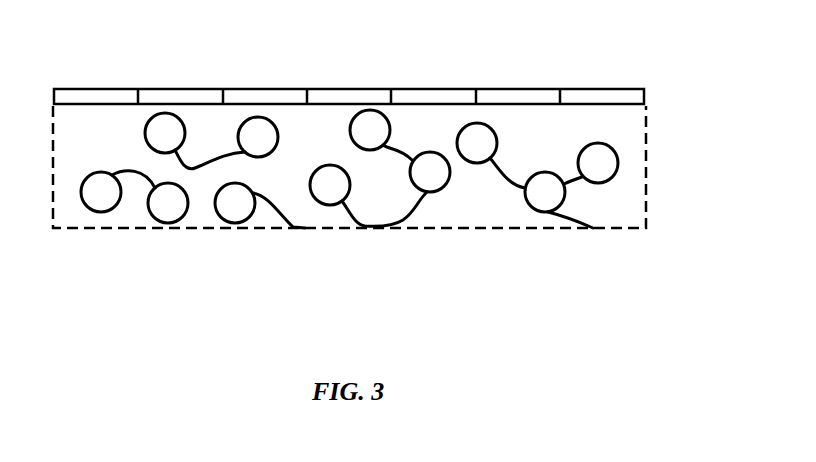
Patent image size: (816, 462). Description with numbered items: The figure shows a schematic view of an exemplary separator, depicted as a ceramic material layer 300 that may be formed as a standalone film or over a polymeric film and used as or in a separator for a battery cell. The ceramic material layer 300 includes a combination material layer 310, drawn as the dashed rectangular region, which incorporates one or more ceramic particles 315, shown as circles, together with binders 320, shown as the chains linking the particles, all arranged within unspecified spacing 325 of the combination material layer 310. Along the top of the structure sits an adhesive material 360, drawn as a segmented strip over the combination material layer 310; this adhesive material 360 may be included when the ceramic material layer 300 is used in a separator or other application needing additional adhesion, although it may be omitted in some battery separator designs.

The ceramic material layer 300 is at (237, 68).
The combination material layer 310 is at (647, 143).
The ceramic particles 315 is at (153, 115).
The binders 320 is at (398, 150).
The unspecified spacing 325 is at (545, 124).
The adhesive material 360 is at (340, 89).